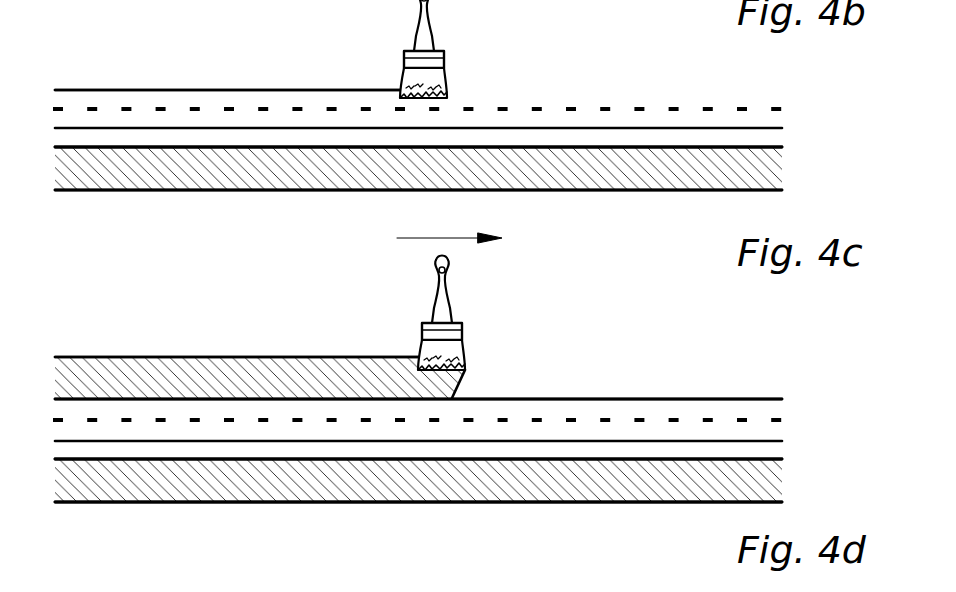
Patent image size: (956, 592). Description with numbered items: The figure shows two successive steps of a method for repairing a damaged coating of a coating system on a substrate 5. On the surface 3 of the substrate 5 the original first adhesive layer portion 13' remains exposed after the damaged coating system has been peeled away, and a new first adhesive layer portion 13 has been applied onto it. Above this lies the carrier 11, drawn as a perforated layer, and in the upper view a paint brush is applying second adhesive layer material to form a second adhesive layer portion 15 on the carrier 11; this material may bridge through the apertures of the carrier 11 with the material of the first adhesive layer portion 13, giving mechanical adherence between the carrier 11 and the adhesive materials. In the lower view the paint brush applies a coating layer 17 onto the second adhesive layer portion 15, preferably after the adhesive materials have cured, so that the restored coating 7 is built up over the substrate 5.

In FIG. 4c, the surface 3 is at (745, 144).
In FIG. 4d, the surface 3 is at (745, 456).
In FIG. 4c, the substrate 5 is at (148, 172).
In FIG. 4d, the substrate 5 is at (148, 483).
In FIG. 4d, the coating 7 is at (131, 353).
In FIG. 4c, the carrier 11 is at (570, 108).
In FIG. 4d, the carrier 11 is at (585, 418).
In FIG. 4c, the first adhesive layer portion 13 is at (418, 71).
In FIG. 4d, the first adhesive layer portion 13 is at (418, 383).
In FIG. 4c, the original first adhesive layer portion 13' is at (418, 89).
In FIG. 4d, the original first adhesive layer portion 13' is at (418, 400).
In FIG. 4c, the second adhesive layer portion 15 is at (192, 97).
In FIG. 4d, the second adhesive layer portion 15 is at (538, 408).
In FIG. 4d, the coating layer 17 is at (240, 380).